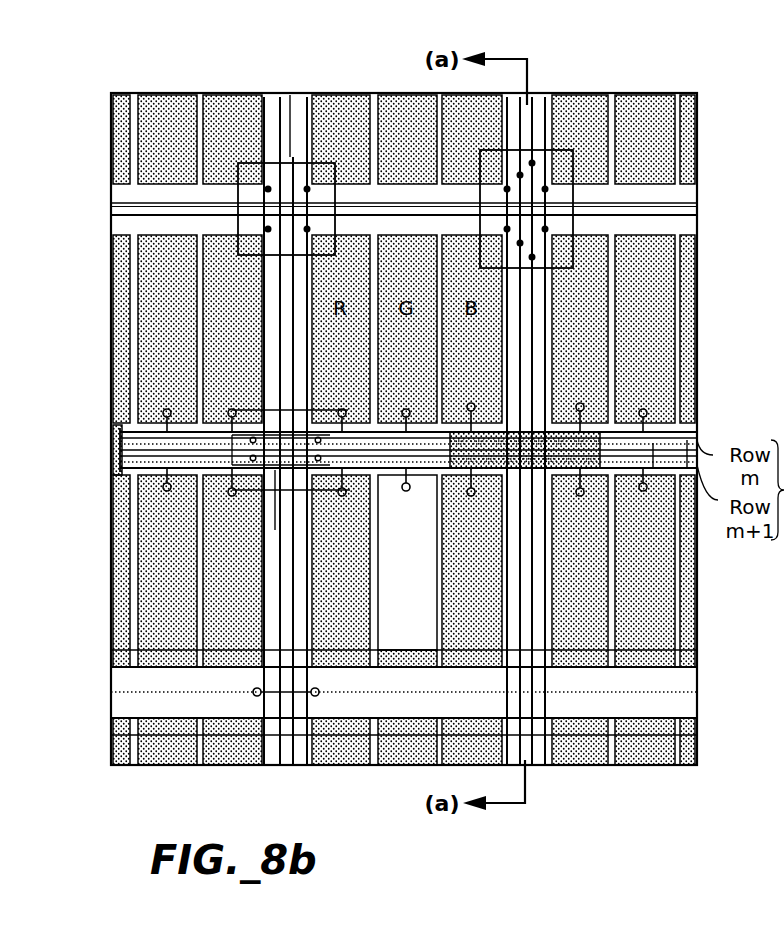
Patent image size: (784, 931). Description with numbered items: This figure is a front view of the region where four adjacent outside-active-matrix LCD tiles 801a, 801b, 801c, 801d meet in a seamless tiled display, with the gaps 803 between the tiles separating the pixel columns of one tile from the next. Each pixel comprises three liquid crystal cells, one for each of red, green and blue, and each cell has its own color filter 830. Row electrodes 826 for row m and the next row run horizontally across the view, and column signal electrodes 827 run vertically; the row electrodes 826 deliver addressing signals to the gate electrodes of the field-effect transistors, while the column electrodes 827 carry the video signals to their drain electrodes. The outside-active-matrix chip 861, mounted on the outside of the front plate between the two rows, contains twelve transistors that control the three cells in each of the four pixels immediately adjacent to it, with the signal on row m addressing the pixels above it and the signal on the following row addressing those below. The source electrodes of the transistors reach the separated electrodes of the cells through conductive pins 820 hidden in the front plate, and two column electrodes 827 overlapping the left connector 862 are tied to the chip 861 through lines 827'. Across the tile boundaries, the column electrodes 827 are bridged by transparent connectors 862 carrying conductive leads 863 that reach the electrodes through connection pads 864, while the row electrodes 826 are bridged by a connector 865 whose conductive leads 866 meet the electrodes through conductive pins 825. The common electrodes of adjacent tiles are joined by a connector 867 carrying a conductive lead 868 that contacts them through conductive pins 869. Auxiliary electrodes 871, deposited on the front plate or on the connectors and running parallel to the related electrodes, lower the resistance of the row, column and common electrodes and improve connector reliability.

The LCD tile portion 801a is at (160, 66).
The LCD tile portion 801b is at (624, 74).
The LCD tile portion 801c is at (139, 785).
The LCD tile portion 801d is at (638, 785).
The gap 803 is at (291, 95).
The conductive pin 820 is at (167, 409).
The conductive pin 825 is at (252, 460).
The row electrode 826 is at (133, 433).
The column signal electrode 827 is at (350, 540).
The line 827' is at (440, 374).
The color filter 830 is at (165, 615).
The outside-active-matrix chip 861 is at (595, 445).
The connector 862 is at (253, 192).
The electrically conductive lead 863 is at (267, 220).
The electrically conductive connection pad 864 is at (507, 230).
The connector 865 is at (258, 468).
The electrically conductive lead 866 is at (275, 473).
The connector 867 is at (127, 706).
The conductive lead 868 is at (276, 698).
The conductive pin 869 is at (256, 698).
The auxiliary electrode 871 is at (653, 443).